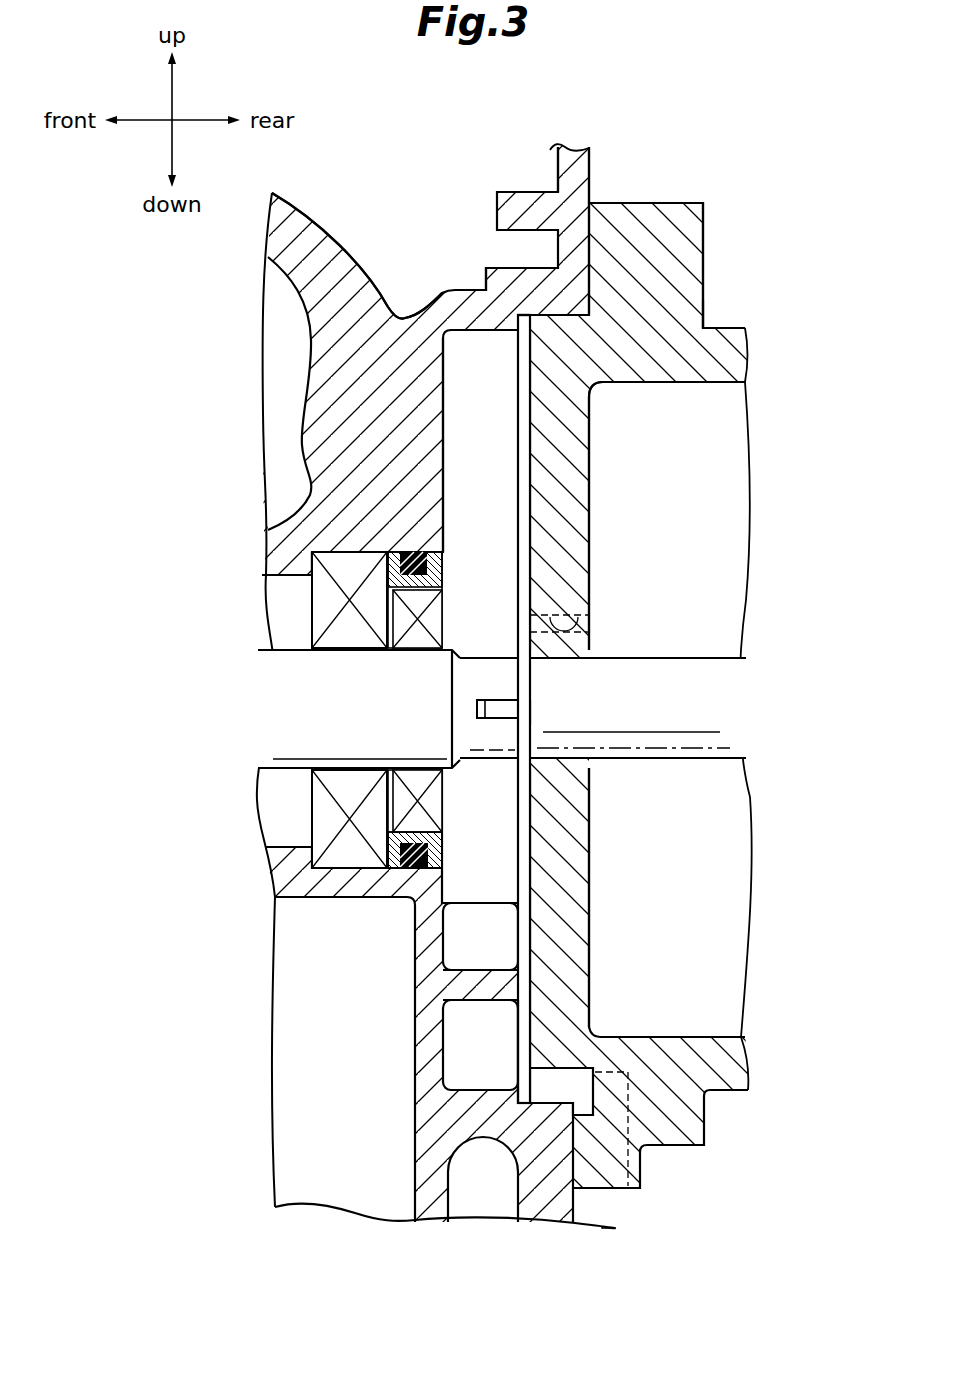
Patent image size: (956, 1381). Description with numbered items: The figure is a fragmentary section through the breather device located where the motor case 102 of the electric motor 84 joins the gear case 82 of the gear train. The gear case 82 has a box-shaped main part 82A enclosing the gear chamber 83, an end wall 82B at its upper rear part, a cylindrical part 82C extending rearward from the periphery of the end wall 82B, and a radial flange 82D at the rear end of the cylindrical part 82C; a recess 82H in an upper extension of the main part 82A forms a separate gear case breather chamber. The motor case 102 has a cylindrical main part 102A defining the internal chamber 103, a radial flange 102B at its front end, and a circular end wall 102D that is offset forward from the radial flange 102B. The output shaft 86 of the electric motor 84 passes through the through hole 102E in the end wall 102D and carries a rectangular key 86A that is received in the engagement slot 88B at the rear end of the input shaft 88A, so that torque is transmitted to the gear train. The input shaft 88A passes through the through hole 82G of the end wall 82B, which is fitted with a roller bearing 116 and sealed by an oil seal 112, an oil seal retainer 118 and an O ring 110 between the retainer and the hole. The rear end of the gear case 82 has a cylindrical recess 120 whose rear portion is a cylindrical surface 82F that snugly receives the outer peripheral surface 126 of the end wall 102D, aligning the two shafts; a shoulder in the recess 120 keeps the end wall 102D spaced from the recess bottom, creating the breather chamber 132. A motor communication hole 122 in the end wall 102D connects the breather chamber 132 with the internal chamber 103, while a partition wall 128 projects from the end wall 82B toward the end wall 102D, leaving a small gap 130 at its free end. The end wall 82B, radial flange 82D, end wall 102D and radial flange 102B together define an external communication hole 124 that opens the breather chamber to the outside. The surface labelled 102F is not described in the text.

The gear case 82 is at (297, 208).
The main part 82A is at (328, 243).
The gear chamber 83 is at (295, 323).
The cylindrical part 82C is at (471, 303).
The radial flange 82D is at (582, 192).
The cylindrical surface 82F is at (567, 322).
The through hole 82G is at (320, 553).
The recess 82H is at (443, 513).
The end wall 82B is at (437, 489).
The motor case 102 is at (723, 1062).
The main part 102A is at (733, 337).
The radial flange 102B is at (668, 210).
The end wall 102D is at (527, 405).
The through hole 102E is at (577, 758).
The plate upper end 102F is at (527, 360).
The internal chamber 103 is at (712, 425).
The electric motor 84 is at (703, 347).
The output shaft 86 is at (722, 667).
The key 86A is at (500, 703).
The input shaft 88A is at (300, 665).
The engagement slot 88B is at (530, 712).
The O ring 110 is at (430, 848).
The oil seal 112 is at (436, 805).
The roller bearing 116 is at (353, 848).
The oil seal retainer 118 is at (397, 868).
The cylindrical recess 120 is at (490, 873).
The motor communication hole 122 is at (593, 616).
The external communication hole 124 is at (547, 1083).
The outer peripheral surface 126 is at (617, 1075).
The partition wall 128 is at (497, 985).
The small gap 130 is at (522, 977).
The breather chamber 132 is at (495, 583).